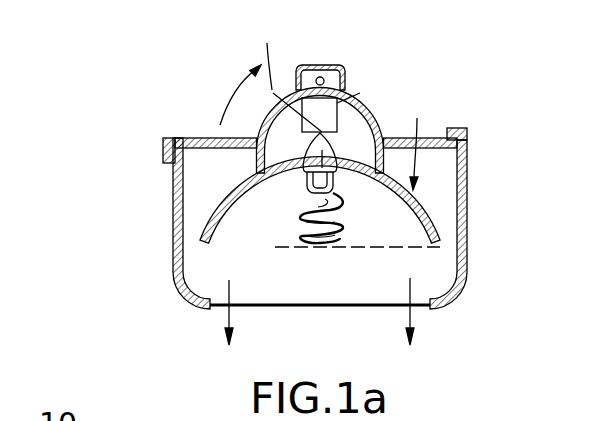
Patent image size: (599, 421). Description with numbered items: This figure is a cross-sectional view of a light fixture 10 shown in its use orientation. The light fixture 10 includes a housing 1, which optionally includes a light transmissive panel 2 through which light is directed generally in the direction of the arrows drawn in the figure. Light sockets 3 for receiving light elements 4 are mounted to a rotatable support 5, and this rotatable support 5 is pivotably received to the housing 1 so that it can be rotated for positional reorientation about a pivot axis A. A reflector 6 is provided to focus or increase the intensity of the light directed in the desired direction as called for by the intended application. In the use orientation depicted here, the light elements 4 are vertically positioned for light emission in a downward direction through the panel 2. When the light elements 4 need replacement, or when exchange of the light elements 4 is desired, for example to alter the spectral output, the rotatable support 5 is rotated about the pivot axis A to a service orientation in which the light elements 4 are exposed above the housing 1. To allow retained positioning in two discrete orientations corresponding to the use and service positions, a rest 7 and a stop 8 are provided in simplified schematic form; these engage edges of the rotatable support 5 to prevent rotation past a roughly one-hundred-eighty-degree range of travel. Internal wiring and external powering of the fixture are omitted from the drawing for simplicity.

The light fixture 10 is at (120, 41).
The housing 1 is at (468, 223).
The light transmissive panel 2 is at (305, 307).
The light socket 3 is at (328, 112).
The light element 4 is at (303, 223).
The rotatable support 5 is at (215, 138).
The reflector 6 is at (235, 196).
The rest 7 is at (178, 138).
The stop 8 is at (457, 128).
The pivot axis A is at (319, 104).